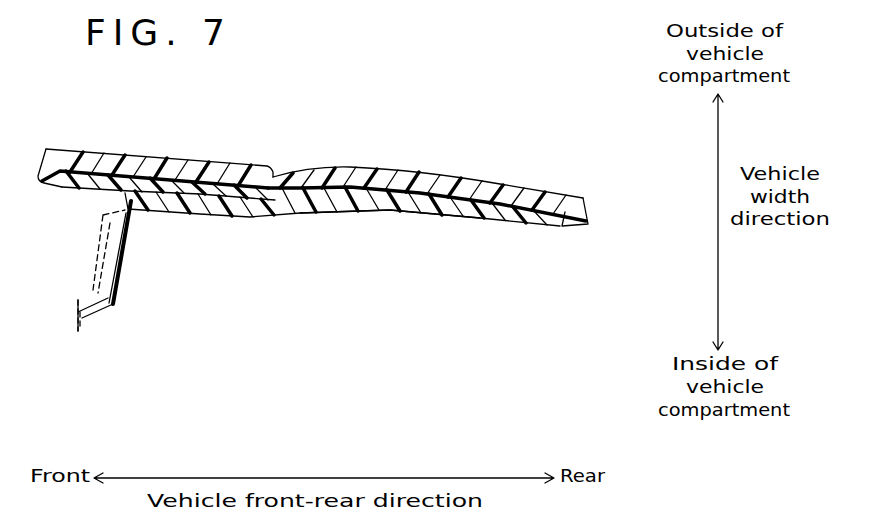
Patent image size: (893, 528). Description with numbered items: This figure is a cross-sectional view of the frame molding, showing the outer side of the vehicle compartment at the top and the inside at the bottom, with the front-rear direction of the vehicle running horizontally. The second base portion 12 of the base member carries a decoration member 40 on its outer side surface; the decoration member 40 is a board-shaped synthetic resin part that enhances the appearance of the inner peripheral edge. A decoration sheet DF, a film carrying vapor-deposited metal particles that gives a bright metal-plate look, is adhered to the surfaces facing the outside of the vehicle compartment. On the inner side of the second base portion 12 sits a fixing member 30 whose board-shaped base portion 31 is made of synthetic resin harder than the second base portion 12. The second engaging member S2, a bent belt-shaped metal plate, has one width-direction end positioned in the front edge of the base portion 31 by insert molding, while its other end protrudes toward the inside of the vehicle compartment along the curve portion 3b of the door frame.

The decoration member 40 is at (153, 155).
The decoration sheet DF is at (428, 170).
The fixing member 30 is at (437, 211).
The base portion 31 is at (390, 211).
The second base portion 12 is at (580, 228).
The second engaging member S2 is at (123, 262).
The curve portion 3b is at (96, 320).